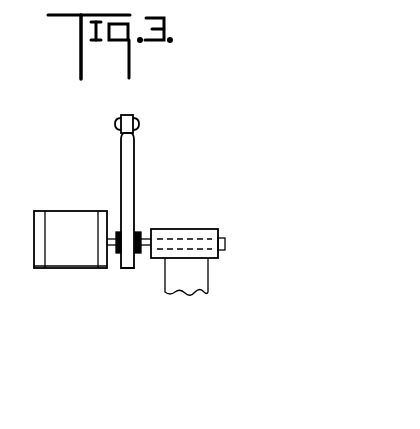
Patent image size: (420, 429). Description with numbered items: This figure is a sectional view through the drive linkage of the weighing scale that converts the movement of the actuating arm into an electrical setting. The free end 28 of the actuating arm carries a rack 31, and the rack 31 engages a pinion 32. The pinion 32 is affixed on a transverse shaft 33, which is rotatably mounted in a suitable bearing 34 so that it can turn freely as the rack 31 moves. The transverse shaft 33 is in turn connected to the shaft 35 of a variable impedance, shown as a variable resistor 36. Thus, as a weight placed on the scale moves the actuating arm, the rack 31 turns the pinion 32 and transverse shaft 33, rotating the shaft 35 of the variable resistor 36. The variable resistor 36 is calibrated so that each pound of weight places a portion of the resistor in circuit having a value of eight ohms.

The free end 28 is at (139, 123).
The rack 31 is at (127, 167).
The pinion 32 is at (142, 230).
The transverse shaft 33 is at (146, 250).
The bearing 34 is at (190, 237).
The shaft 35 is at (113, 253).
The variable resistor 36 is at (62, 227).